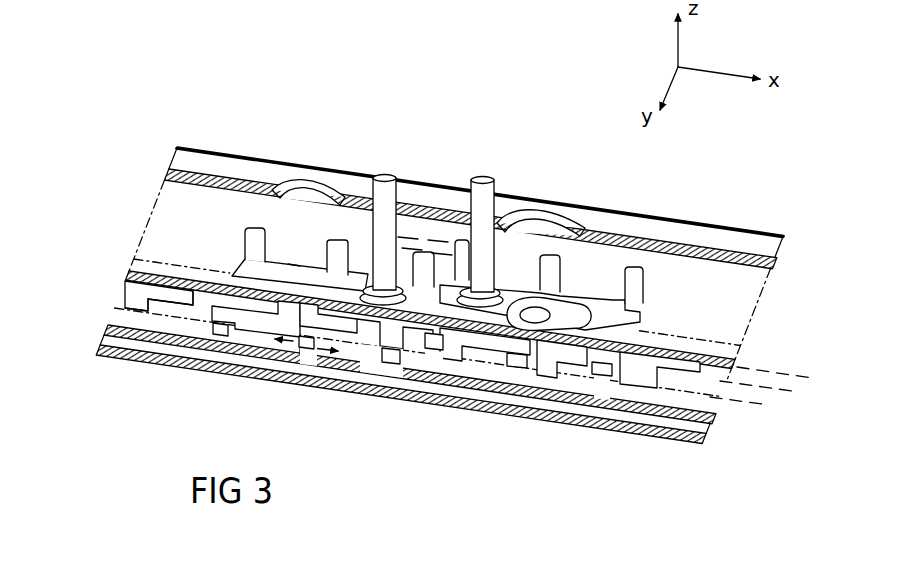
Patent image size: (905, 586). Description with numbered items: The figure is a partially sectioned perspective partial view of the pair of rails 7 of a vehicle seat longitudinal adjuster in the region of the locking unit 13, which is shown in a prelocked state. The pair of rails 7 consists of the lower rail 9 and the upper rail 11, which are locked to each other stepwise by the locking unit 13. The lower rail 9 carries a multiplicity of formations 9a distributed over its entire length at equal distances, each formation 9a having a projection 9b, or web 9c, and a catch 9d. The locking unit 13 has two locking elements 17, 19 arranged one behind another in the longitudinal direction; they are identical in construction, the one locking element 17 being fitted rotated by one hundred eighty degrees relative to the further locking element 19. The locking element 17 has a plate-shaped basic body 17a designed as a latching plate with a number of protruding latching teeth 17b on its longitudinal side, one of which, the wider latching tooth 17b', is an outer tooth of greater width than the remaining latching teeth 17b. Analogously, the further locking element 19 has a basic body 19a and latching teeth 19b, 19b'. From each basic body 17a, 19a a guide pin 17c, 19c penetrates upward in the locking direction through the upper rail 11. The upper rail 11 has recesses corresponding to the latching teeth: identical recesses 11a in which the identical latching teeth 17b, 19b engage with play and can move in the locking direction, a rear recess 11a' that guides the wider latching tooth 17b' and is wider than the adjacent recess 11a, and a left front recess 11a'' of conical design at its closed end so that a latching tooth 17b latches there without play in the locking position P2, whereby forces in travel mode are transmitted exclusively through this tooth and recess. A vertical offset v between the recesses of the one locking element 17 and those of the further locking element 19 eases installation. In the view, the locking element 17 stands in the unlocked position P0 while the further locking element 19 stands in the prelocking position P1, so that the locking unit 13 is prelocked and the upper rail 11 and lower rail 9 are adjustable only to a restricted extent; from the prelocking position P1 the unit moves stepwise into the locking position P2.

The pair of rails 7 is at (139, 207).
The lower rail 9 is at (101, 351).
The formations 9a is at (133, 290).
The projection 9b is at (134, 306).
The web 9c is at (176, 297).
The catch 9d is at (209, 306).
The upper rail 11 is at (190, 160).
The recesses 11a is at (337, 197).
The recess 11a' is at (414, 307).
The left front recess 11a'' is at (439, 308).
The locking unit 13 is at (568, 151).
The locking element 17 is at (236, 265).
The basic body 17a is at (338, 252).
The latching teeth 17b is at (306, 387).
The wider latching tooth 17b' is at (306, 178).
The guide pin 17c is at (387, 175).
The further locking element 19 is at (644, 296).
The basic body 19a is at (616, 313).
The latching teeth 19b is at (484, 396).
The latching tooth 19b' is at (620, 417).
The guide pin 19c is at (485, 177).
The vertical offset v is at (408, 243).
The unlocked position P0 is at (748, 415).
The prelocking position P1 is at (769, 398).
The locking position P2 is at (788, 376).